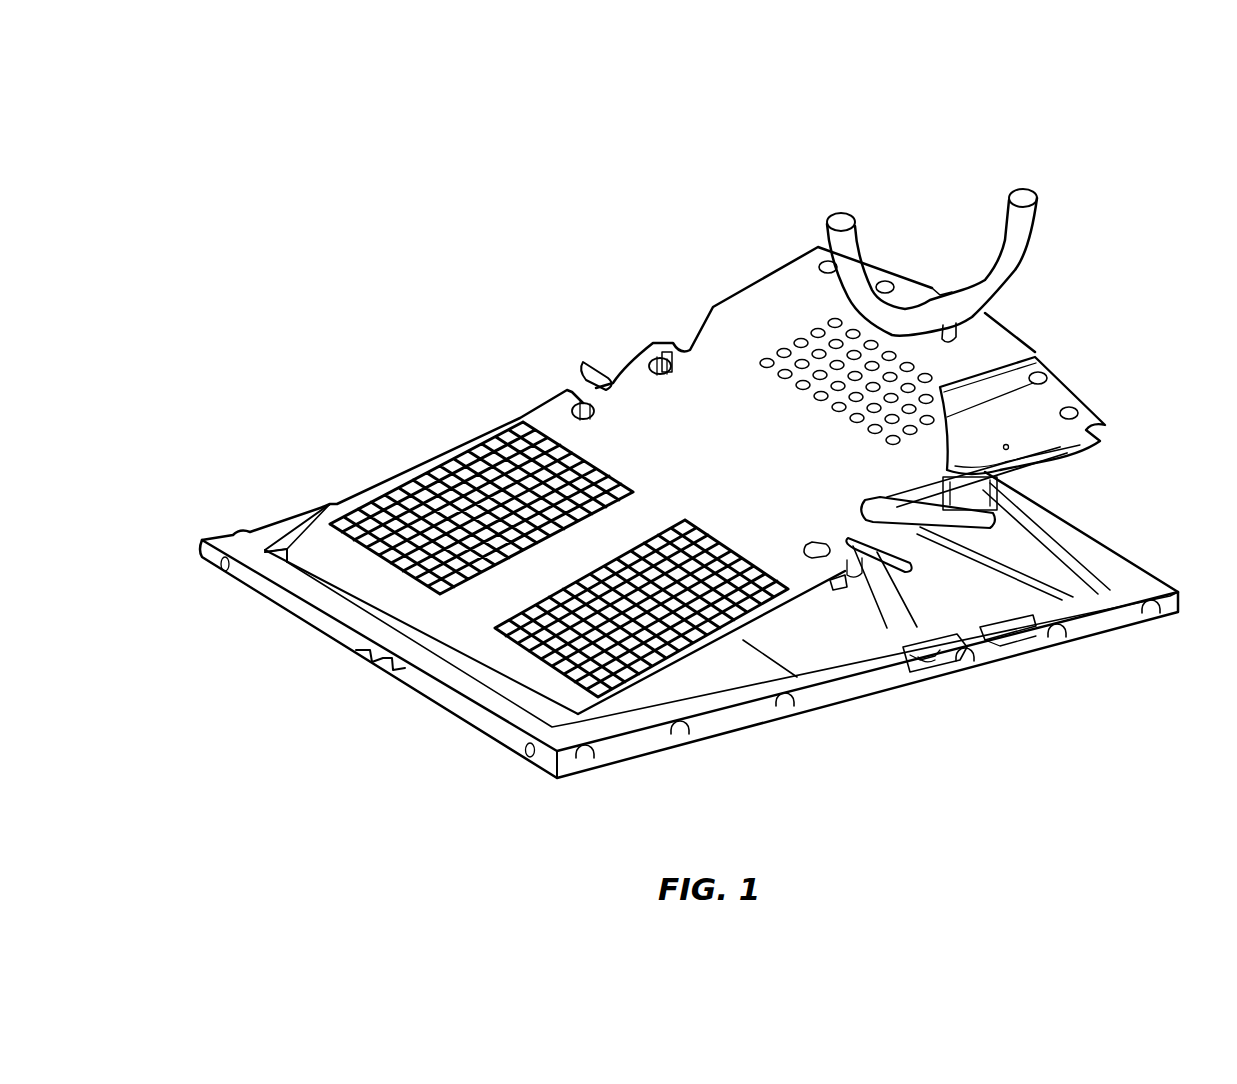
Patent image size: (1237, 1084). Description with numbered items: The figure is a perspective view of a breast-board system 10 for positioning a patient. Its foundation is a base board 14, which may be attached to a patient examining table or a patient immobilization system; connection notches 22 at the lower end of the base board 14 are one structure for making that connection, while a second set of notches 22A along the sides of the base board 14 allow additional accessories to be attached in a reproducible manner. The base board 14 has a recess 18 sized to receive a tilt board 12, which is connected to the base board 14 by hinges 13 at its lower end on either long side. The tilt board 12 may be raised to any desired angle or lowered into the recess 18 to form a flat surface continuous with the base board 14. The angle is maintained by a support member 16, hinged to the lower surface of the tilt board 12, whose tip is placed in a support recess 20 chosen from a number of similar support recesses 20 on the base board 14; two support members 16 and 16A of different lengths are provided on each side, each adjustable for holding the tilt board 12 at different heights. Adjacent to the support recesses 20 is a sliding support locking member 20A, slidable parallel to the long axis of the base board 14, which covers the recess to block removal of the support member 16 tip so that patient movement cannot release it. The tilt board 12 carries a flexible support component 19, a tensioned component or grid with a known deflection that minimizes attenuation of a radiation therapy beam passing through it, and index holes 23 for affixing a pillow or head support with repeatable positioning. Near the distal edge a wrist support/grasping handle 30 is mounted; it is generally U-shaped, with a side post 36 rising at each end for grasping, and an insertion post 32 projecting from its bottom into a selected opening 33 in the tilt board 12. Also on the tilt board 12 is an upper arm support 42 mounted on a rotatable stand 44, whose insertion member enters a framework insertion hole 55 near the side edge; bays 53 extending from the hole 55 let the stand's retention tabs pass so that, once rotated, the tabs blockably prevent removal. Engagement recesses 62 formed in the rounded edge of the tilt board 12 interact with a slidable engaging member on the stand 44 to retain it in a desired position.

The breast-board system 10 is at (716, 210).
The tilt board 12 is at (373, 580).
The hinges 13 is at (285, 548).
The base board 14 is at (465, 718).
The support member 16 is at (897, 622).
The support member 16A is at (600, 375).
The recess 18 is at (992, 582).
The flexible support component 19 is at (460, 456).
The support recess 20 is at (1013, 643).
The sliding support locking member 20A is at (943, 652).
The connection notches 22 is at (362, 662).
The notches 22A is at (673, 745).
The index holes 23 is at (816, 328).
The wrist support/grasping handle 30 is at (1003, 165).
The insertion post 32 is at (955, 333).
The opening 33 is at (886, 282).
The side post 36 is at (1025, 222).
The upper arm support 42 is at (1070, 456).
The rotatable stand 44 is at (930, 523).
The bays 53 is at (668, 354).
The framework insertion hole 55 is at (578, 410).
The engagement recesses 62 is at (838, 600).